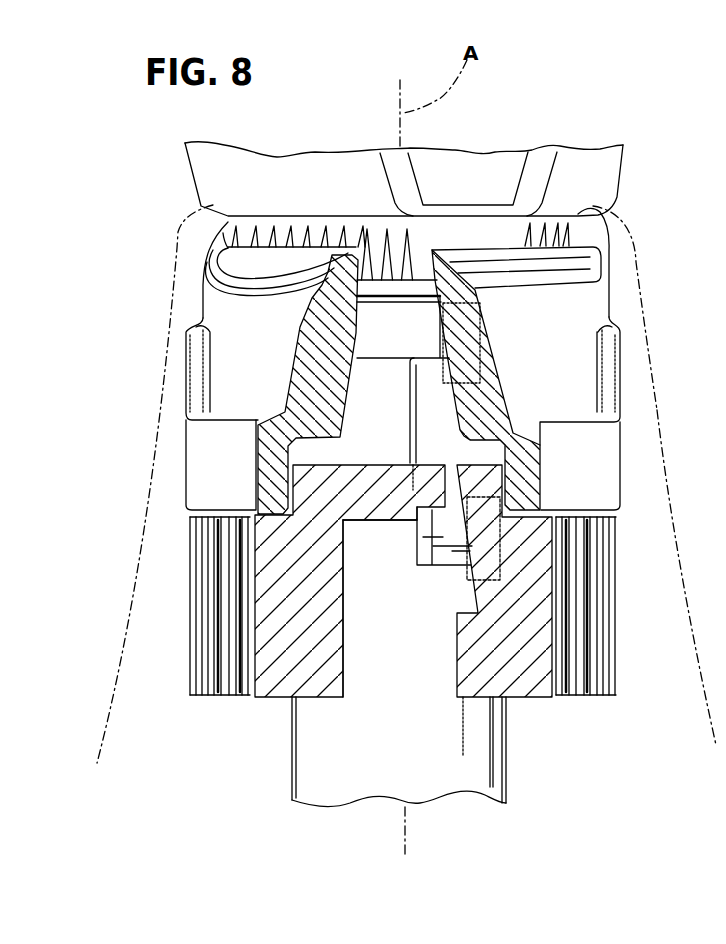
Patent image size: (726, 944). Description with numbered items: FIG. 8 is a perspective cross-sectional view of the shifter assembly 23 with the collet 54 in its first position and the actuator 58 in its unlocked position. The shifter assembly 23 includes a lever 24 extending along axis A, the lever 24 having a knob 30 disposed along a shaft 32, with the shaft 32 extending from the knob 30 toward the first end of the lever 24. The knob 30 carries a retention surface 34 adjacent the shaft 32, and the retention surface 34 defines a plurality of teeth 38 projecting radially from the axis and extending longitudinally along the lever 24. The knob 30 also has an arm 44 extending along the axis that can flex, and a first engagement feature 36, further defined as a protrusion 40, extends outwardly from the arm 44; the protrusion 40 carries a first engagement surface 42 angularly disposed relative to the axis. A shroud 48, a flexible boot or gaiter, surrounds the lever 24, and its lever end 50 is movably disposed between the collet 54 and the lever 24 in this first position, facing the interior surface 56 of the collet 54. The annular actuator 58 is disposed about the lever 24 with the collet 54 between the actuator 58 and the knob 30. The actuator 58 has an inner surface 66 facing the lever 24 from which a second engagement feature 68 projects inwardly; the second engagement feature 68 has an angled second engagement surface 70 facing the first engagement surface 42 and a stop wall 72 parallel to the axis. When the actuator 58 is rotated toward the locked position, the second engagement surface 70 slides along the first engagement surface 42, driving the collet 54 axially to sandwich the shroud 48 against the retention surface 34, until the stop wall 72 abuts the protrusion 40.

The shifter assembly 23 is at (160, 177).
The knob 30 is at (603, 167).
The lever end 50 is at (635, 240).
The retention surface 34 is at (226, 216).
The teeth 38 is at (210, 273).
The interior surface 56 is at (322, 335).
The collet 54 is at (565, 307).
The second engagement feature 68 is at (369, 458).
The first engagement surface 42 is at (447, 505).
The second engagement surface 70 is at (392, 518).
The stop wall 72 is at (344, 598).
The arm 44 is at (420, 568).
The first engagement feature 36 is at (438, 575).
The protrusion 40 is at (457, 555).
The actuator 58 is at (595, 580).
The inner surface 66 is at (347, 674).
The lever 24 is at (548, 762).
The shaft 32 is at (477, 772).
The shroud 48 is at (693, 630).